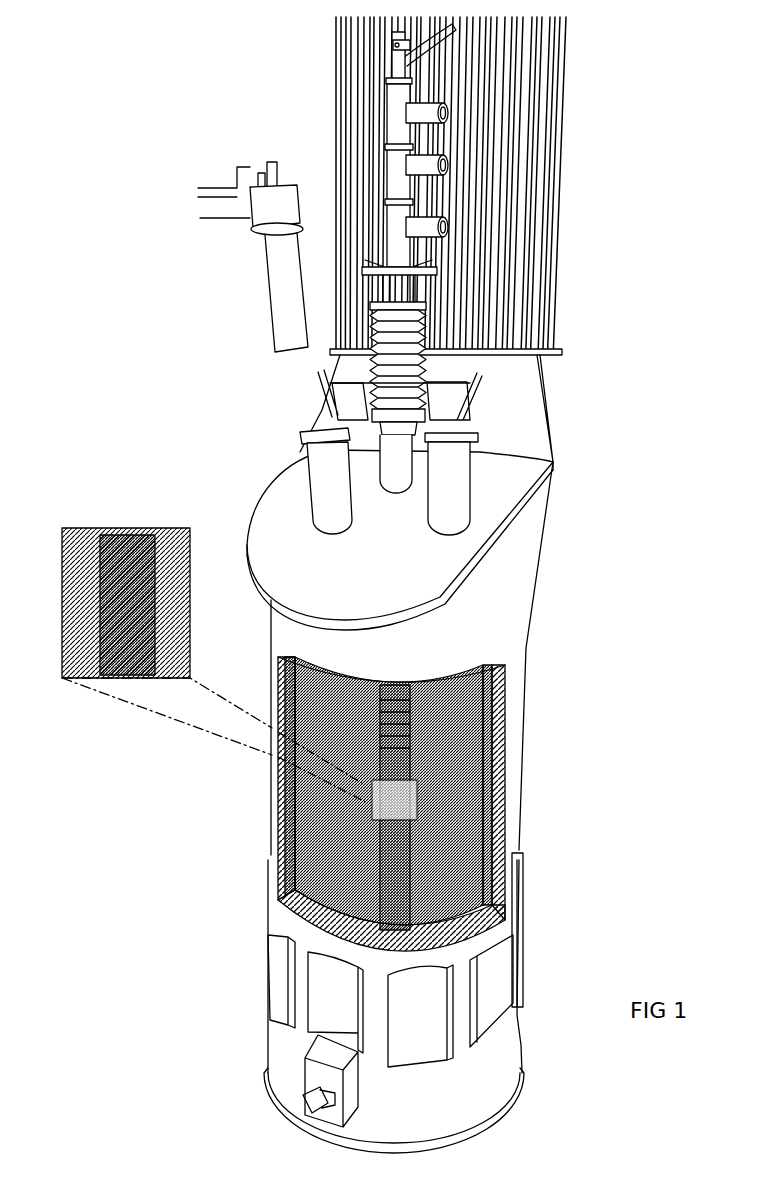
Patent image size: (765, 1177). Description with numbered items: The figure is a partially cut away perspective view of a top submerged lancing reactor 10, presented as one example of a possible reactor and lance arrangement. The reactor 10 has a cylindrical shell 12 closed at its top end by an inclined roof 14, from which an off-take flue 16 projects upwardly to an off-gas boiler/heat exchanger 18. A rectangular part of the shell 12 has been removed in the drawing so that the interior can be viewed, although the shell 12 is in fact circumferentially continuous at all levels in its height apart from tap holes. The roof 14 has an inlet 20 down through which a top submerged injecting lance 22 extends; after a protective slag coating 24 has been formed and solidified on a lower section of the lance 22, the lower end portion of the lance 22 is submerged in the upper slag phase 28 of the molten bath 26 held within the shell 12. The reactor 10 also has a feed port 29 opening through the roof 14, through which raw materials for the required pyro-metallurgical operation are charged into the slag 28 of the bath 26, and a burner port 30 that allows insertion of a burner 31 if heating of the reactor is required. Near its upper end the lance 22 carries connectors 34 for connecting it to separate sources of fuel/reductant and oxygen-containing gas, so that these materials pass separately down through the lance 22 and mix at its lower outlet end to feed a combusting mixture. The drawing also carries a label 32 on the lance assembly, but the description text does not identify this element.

The reactor 10 is at (537, 592).
The cylindrical shell 12 is at (513, 752).
The inclined roof 14 is at (420, 582).
The off-take flue 16 is at (528, 405).
The off-gas boiler/heat exchanger 18 is at (507, 137).
The inlet 20 is at (400, 470).
The top submerged injecting lance 22 is at (398, 252).
The protective slag coating 24 is at (118, 590).
The molten bath 26 is at (327, 867).
The upper slag phase 28 is at (391, 804).
The feed port 29 is at (500, 493).
The burner port 30 is at (327, 482).
The burner 31 is at (285, 308).
The bellows 32 is at (398, 373).
The connectors 34 is at (423, 112).